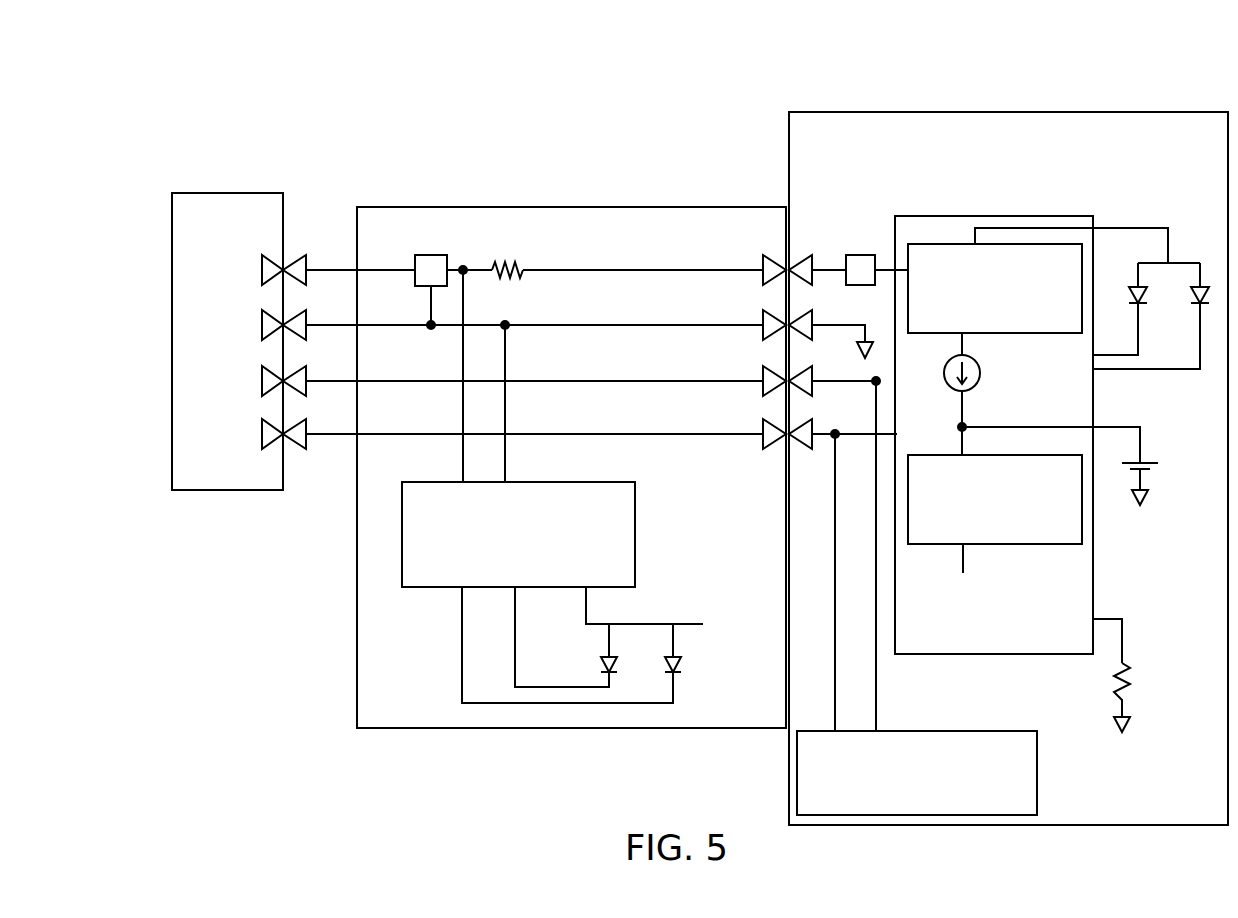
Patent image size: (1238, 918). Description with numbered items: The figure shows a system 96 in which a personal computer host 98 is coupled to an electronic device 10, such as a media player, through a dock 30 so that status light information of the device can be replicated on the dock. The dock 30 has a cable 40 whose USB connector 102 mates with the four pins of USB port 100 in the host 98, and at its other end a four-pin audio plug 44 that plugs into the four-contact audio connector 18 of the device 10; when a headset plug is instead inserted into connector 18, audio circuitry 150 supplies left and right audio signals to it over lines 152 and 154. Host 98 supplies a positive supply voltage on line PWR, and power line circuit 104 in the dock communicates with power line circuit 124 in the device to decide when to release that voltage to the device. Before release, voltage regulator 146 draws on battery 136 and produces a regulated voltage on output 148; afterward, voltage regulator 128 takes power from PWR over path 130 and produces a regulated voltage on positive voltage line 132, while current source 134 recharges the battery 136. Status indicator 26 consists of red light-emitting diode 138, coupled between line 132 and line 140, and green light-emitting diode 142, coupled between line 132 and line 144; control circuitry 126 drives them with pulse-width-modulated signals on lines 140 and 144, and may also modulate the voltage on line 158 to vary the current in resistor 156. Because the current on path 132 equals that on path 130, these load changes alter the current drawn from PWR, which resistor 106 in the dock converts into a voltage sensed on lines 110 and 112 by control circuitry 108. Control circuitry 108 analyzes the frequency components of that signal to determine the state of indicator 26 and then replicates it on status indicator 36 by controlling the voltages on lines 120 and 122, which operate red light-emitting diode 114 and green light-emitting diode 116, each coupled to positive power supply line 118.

The system 96 is at (760, 42).
The electronic device 10 is at (958, 112).
The personal computer host 98 is at (223, 193).
The USB port 100 is at (248, 397).
The connector 102 is at (317, 397).
The cable 40 is at (288, 245).
The dock 30 is at (644, 207).
The power line circuit 104 is at (415, 282).
The resistor 106 is at (528, 289).
The line 110 is at (463, 403).
The line 112 is at (506, 403).
The control circuitry 108 is at (425, 588).
The line 120 is at (463, 602).
The line 122 is at (516, 602).
The positive power supply line 118 is at (650, 623).
The light-emitting diode 114 is at (602, 658).
The light-emitting diode 116 is at (683, 658).
The status indicator 36 is at (728, 602).
The four-pin audio plug 44 is at (752, 307).
The connector 18 is at (831, 326).
The power line circuit 124 is at (858, 254).
The path 130 is at (900, 276).
The control circuitry 126 is at (962, 216).
The positive voltage line 132 is at (1033, 228).
The voltage regulator 128 is at (1038, 333).
The current source 134 is at (980, 373).
The line 144 is at (1117, 372).
The battery 136 is at (1156, 446).
The voltage regulator 146 is at (1040, 544).
The output 148 is at (961, 553).
The status indicator 26 is at (1169, 224).
The line 140 is at (1123, 355).
The light-emitting diode 142 is at (1157, 277).
The light-emitting diode 138 is at (1167, 336).
The line 158 is at (1110, 617).
The resistor 156 is at (1145, 669).
The audio circuitry 150 is at (1010, 728).
The audio line DN 152 is at (836, 692).
The audio line DP 154 is at (876, 690).